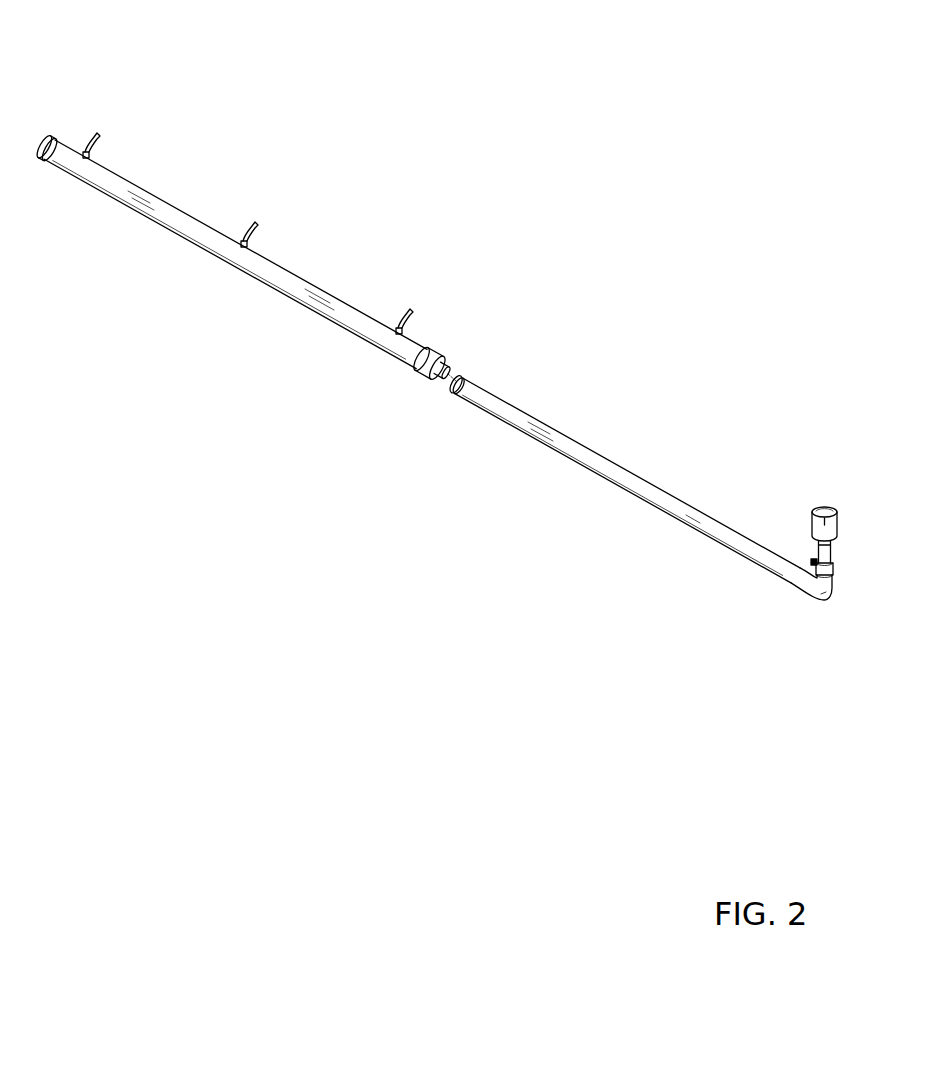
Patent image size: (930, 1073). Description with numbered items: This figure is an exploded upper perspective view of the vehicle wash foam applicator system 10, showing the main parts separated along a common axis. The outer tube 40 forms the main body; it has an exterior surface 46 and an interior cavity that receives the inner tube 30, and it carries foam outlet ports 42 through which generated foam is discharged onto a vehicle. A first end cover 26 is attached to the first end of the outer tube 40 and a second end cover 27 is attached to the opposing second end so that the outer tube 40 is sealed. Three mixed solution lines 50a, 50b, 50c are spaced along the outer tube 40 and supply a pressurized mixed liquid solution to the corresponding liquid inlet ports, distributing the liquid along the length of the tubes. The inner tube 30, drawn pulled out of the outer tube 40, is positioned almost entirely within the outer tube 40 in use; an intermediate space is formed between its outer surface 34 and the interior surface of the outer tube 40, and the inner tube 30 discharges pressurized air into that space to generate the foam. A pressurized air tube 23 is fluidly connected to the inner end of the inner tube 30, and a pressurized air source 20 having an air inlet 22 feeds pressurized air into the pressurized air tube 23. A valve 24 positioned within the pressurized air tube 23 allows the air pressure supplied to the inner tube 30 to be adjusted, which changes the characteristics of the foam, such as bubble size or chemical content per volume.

The vehicle wash foam applicator system 10 is at (548, 136).
The pressurized air source 20 is at (812, 519).
The air inlet 22 is at (824, 511).
The pressurized air tube 23 is at (817, 576).
The valve 24 is at (813, 560).
The first end cover 26 is at (439, 357).
The second end cover 27 is at (49, 136).
The inner tube 30 is at (630, 468).
The outer surface 34 is at (574, 458).
The outer tube 40 is at (277, 262).
The foam outlet port 42 is at (160, 233).
The exterior surface 46 is at (108, 179).
The mixed solution line 50a is at (97, 133).
The mixed solution line 50b is at (255, 222).
The mixed solution line 50c is at (410, 309).